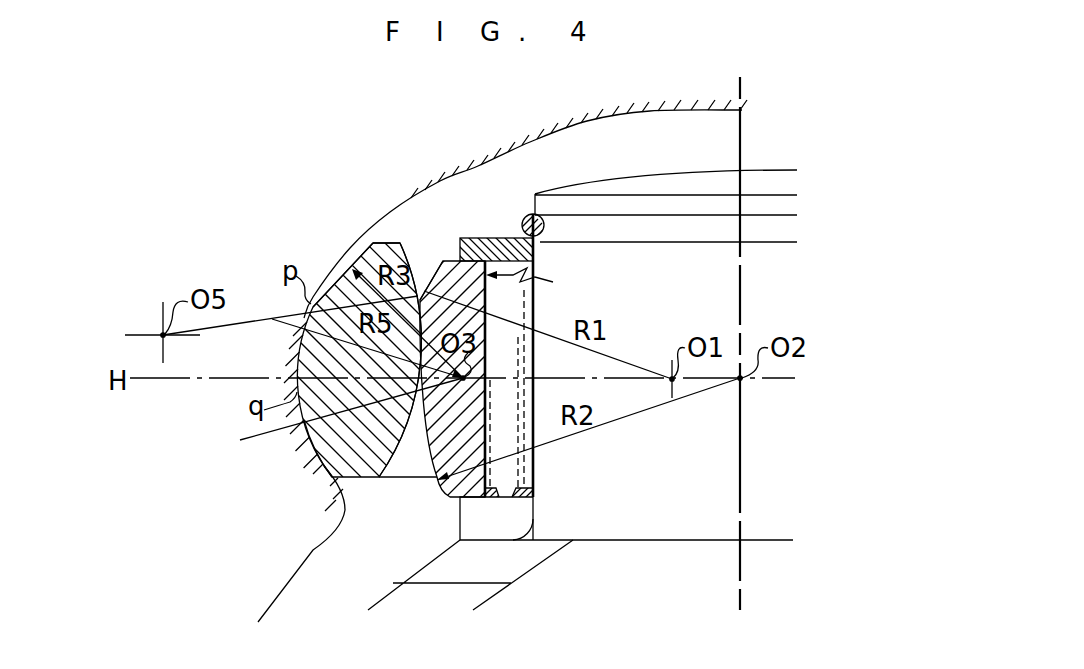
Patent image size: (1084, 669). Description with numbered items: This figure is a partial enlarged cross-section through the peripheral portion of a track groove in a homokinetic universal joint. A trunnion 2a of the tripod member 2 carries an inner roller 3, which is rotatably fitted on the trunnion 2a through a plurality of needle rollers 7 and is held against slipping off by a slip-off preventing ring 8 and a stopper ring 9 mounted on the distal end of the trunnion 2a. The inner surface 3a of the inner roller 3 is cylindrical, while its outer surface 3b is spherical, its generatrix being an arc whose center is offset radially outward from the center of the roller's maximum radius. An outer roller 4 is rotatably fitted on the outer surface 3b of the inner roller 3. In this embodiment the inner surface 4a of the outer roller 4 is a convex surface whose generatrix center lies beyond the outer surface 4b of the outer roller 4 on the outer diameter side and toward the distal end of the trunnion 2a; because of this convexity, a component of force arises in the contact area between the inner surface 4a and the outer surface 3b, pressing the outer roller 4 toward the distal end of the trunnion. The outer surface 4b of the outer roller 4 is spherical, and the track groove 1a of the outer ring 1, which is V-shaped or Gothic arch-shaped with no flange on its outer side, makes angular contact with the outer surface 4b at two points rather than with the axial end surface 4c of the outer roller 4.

The outer ring 1 is at (253, 585).
The track groove 1a is at (304, 344).
The tripod member 2 is at (413, 605).
The trunnion 2a is at (654, 262).
The inner roller 3 is at (446, 496).
The inner surface of the inner roller 3a is at (537, 355).
The outer surface of the inner roller 3b is at (432, 278).
The outer roller 4 is at (328, 497).
The inner surface of the outer roller 4a is at (387, 462).
The outer surface of the outer roller 4b is at (310, 455).
The axial end surface of the outer roller 4c is at (386, 238).
The needle rollers 7 is at (532, 490).
The slip-off preventing ring 8 is at (491, 236).
The stopper ring 9 is at (531, 213).